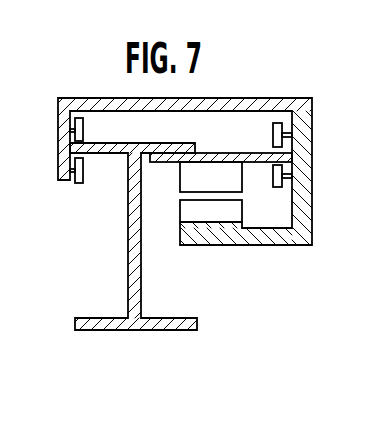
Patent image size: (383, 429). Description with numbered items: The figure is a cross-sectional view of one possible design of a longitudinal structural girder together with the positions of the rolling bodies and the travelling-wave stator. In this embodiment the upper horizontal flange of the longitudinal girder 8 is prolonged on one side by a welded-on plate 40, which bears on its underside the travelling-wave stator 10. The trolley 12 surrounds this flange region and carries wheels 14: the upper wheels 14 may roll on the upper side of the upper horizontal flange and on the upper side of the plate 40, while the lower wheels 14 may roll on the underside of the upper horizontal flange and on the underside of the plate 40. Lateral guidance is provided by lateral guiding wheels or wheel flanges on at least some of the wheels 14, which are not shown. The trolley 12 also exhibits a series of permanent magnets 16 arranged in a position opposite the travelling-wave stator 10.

The longitudinal girder 8 is at (128, 247).
The travelling-wave stator 10 is at (192, 180).
The trolley 12 is at (322, 163).
The wheels 14 is at (83, 178).
The permanent magnets 16 is at (190, 212).
The plate 40 is at (218, 152).